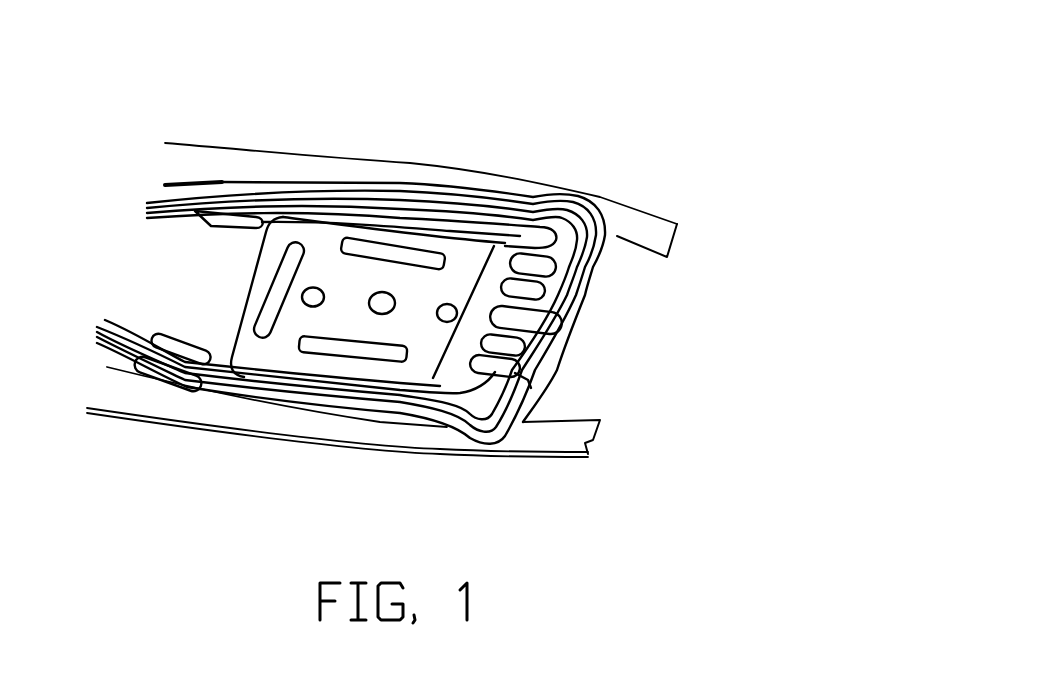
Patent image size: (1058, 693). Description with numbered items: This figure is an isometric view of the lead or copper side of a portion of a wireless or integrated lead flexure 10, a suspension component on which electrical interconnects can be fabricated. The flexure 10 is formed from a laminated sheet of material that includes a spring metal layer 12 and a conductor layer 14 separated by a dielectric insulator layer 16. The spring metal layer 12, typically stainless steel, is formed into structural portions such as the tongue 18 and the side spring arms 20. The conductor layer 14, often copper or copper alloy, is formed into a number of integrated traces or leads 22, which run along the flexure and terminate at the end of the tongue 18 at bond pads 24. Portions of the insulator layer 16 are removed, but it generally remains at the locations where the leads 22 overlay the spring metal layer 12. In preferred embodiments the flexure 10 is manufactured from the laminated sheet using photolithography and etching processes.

The integrated lead flexure 10 is at (657, 310).
The spring metal layer 12 is at (592, 437).
The conductor layer 14 is at (382, 403).
The dielectric insulator layer 16 is at (345, 250).
The tongue 18 is at (360, 328).
The side spring arms 20 is at (355, 170).
The leads 22 is at (572, 205).
The bond pads 24 is at (552, 271).